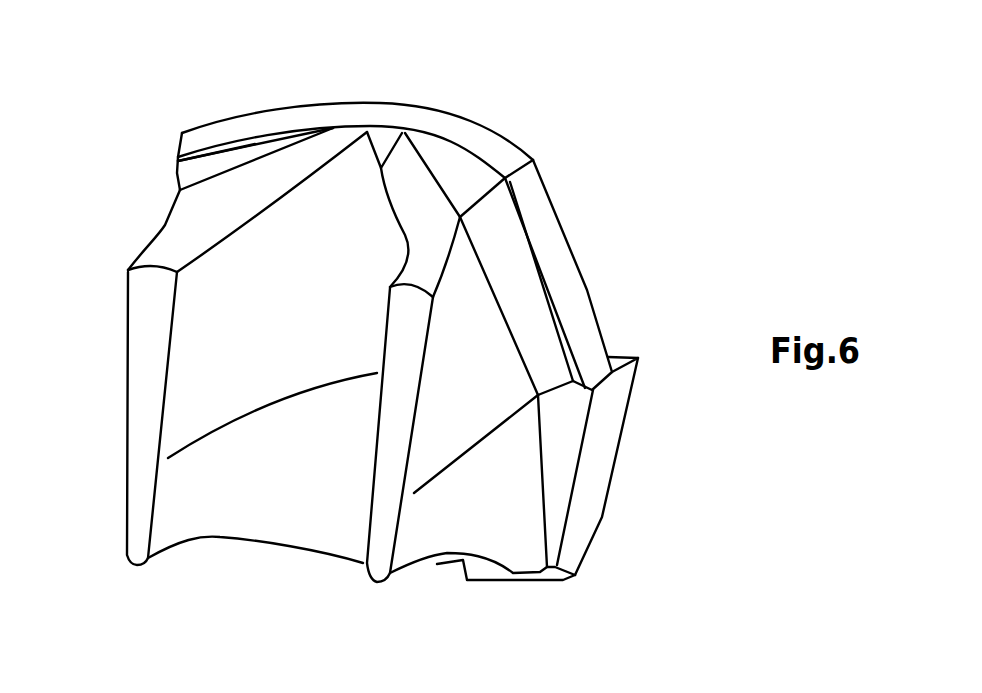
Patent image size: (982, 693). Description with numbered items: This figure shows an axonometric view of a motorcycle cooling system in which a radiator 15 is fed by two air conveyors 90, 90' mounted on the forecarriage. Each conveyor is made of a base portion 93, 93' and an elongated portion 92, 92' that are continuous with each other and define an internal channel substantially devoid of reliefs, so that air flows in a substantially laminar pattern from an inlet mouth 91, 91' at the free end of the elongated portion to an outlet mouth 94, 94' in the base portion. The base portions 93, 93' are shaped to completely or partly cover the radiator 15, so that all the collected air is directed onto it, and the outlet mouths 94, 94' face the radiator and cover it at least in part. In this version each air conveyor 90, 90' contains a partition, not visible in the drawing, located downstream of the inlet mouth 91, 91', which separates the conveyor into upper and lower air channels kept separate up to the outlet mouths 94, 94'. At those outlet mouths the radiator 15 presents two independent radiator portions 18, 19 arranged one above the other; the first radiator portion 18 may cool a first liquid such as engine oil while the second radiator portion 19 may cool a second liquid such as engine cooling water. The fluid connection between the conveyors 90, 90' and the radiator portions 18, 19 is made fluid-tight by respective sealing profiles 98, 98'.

The radiator 15 is at (630, 325).
The first radiator portion 18 is at (578, 307).
The second radiator portion 19 is at (612, 409).
The air conveyor 90 is at (498, 446).
The second air conveyor 90' is at (107, 185).
The inlet mouth 91 is at (354, 473).
The inlet mouth of second conveyor 91' is at (159, 464).
The elongated portion 92 is at (482, 594).
The elongated portion of second conveyor 92' is at (262, 485).
The base portion 93 is at (439, 170).
The base portion of second conveyor 93' is at (272, 154).
The outlet mouth 94 is at (510, 193).
The outlet mouth of second conveyor 94' is at (233, 82).
The sealing profile 98 is at (585, 267).
The sealing profile of second conveyor 98' is at (426, 334).